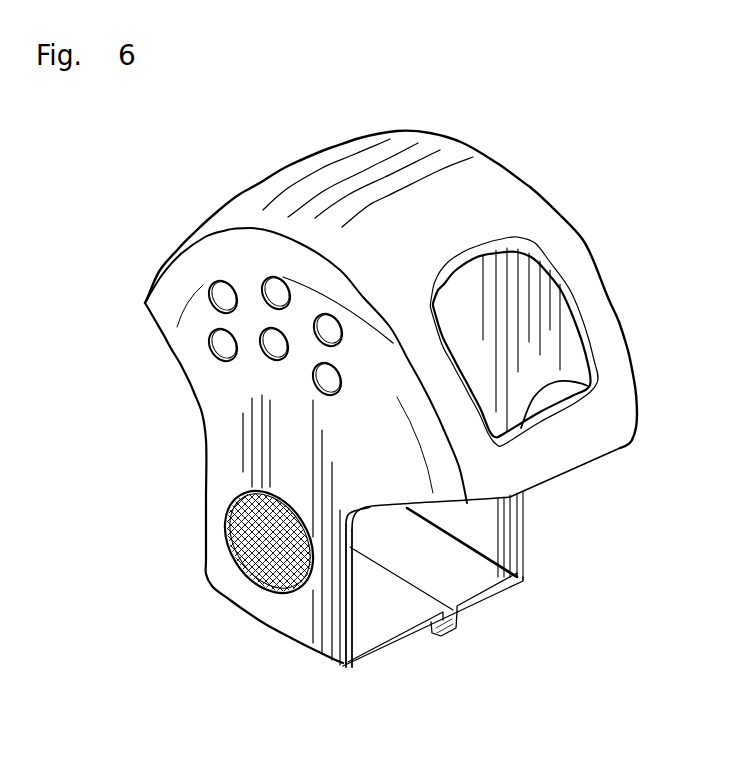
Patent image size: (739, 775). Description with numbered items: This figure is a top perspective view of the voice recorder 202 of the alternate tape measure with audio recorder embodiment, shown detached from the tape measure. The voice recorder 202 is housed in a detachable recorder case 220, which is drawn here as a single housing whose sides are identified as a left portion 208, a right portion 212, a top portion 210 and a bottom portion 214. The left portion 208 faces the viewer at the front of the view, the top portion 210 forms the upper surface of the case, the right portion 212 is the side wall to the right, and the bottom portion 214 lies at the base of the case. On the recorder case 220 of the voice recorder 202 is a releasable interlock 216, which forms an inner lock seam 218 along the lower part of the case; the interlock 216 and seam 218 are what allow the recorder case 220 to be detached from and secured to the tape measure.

The voice recorder 202 is at (517, 193).
The left portion 208 is at (223, 438).
The top portion 210 is at (473, 177).
The right portion 212 is at (547, 327).
The bottom portion 214 is at (467, 580).
The releasable interlock 216 is at (450, 623).
The inner lock seam 218 is at (390, 572).
The recorder case 220 is at (563, 250).